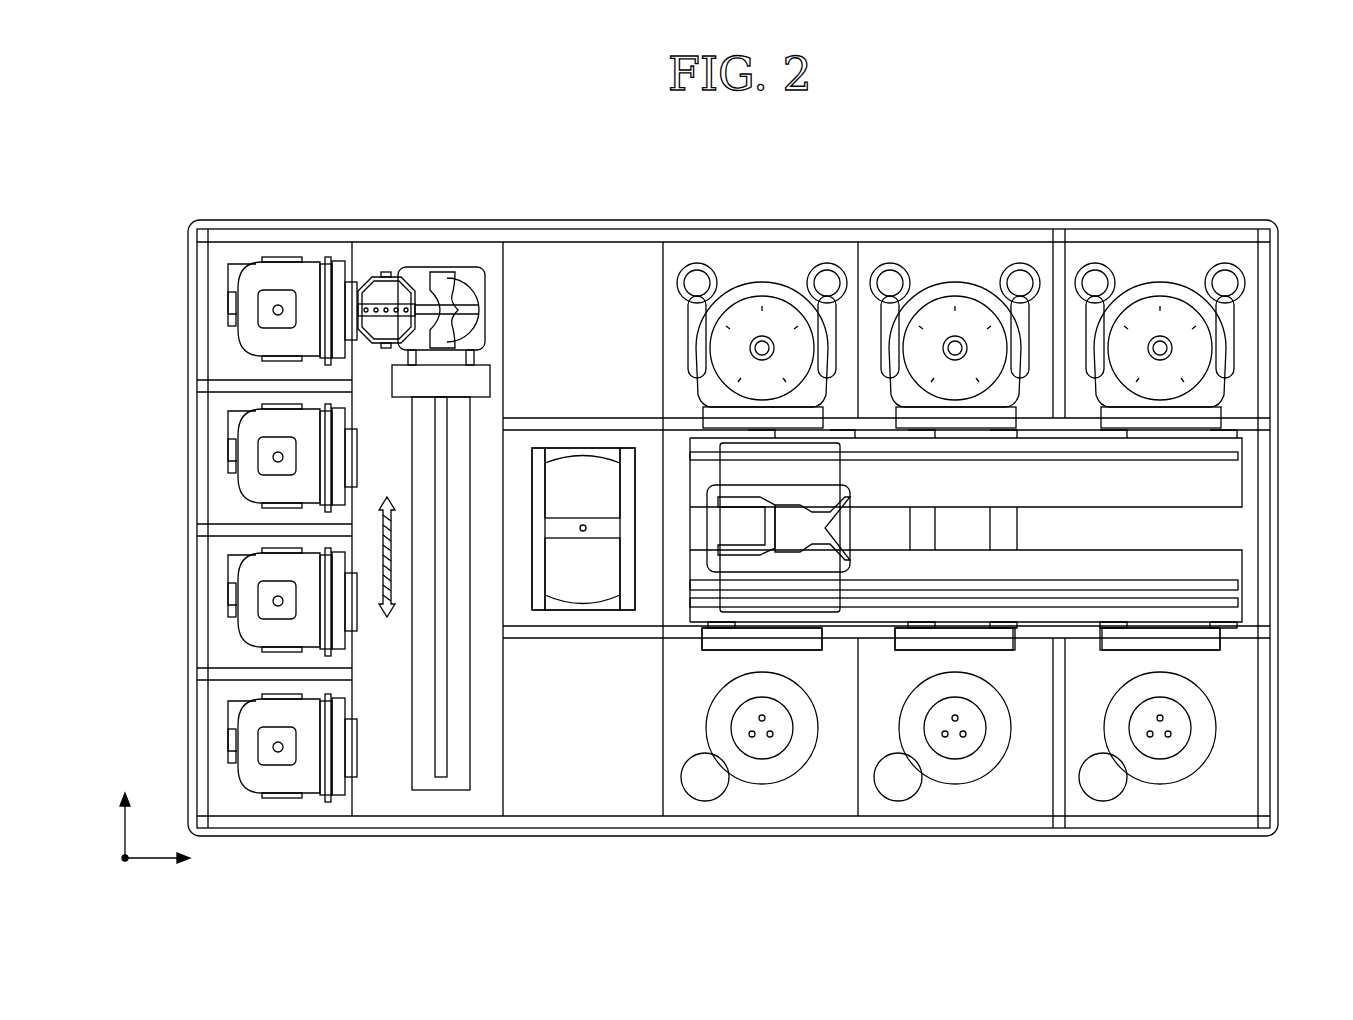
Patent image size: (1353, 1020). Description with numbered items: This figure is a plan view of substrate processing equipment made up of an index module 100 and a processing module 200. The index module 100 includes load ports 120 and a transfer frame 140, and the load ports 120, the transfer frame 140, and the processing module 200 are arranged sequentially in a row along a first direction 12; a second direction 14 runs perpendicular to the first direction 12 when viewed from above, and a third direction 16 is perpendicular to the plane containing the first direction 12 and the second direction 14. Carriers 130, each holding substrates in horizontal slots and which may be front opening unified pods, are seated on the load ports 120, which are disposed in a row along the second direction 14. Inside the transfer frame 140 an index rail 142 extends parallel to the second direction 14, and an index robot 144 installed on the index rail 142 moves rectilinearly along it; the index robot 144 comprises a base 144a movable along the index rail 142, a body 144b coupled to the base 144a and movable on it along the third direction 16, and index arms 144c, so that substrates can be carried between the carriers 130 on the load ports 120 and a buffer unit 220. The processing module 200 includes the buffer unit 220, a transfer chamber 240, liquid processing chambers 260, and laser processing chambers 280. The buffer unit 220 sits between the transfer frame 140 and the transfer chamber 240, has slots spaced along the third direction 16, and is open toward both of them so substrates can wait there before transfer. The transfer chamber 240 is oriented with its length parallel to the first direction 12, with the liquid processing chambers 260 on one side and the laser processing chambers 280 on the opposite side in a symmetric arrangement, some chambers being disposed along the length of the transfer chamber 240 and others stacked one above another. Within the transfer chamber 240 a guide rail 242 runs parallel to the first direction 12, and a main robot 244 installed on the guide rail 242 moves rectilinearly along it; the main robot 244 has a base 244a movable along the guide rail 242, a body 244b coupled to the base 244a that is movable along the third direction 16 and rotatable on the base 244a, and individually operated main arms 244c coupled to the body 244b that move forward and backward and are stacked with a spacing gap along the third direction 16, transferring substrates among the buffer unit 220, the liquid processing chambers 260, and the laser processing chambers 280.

The first direction 12 is at (158, 860).
The second direction 14 is at (124, 822).
The third direction 16 is at (125, 860).
The index module 100 is at (377, 542).
The load ports 120 is at (277, 540).
The carriers 130 is at (278, 268).
The transfer frame 140 is at (432, 518).
The index rail 142 is at (462, 413).
The index robot 144 is at (403, 265).
The base 144a is at (446, 287).
The body 144b is at (415, 288).
The index arms 144c is at (373, 303).
The processing module 200 is at (926, 543).
The buffer unit 220 is at (581, 620).
The transfer chamber 240 is at (1290, 580).
The guide rail 242 is at (1042, 593).
The main robot 244 is at (757, 373).
The base 244a is at (805, 456).
The body 244b is at (777, 495).
The main arms 244c is at (747, 505).
The liquid processing chambers 260 is at (992, 218).
The laser processing chambers 280 is at (764, 824).